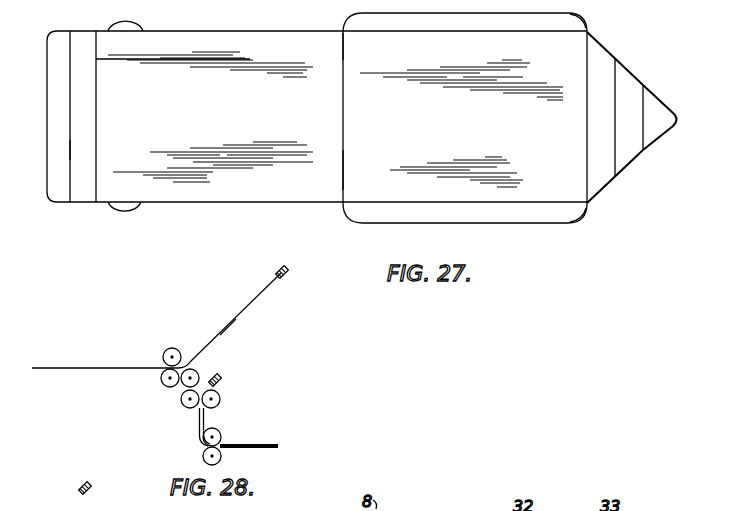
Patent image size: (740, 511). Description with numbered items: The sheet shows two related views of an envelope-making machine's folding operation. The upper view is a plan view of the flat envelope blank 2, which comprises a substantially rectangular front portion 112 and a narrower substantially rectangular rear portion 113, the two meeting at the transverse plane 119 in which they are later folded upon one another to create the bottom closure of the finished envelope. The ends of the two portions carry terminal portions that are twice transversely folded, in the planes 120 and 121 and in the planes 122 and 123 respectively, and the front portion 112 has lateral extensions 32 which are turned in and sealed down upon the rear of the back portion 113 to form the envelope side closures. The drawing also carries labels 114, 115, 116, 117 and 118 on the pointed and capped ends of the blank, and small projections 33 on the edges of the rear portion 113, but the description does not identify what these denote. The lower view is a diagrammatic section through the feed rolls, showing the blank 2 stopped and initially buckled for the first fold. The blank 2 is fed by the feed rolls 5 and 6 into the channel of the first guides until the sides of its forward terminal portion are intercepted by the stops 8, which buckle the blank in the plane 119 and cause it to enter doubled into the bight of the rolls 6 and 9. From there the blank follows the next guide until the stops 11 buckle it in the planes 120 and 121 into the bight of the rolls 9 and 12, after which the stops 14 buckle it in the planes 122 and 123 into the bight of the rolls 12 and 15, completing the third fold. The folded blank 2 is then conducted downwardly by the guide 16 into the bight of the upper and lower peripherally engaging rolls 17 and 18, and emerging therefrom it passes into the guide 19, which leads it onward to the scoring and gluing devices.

In FIG. 27, the envelope blank 2 is at (333, 30).
In FIG. 28, the envelope blank 2 is at (230, 323).
In FIG. 28, the feed roll 5 is at (172, 348).
In FIG. 28, the feed roll 6 is at (163, 384).
In FIG. 28, the stops 8 is at (292, 270).
In FIG. 28, the feed roll 9 is at (201, 371).
In FIG. 28, the stops 11 is at (92, 490).
In FIG. 28, the feed roll 12 is at (185, 406).
In FIG. 28, the stops 14 is at (222, 375).
In FIG. 28, the feed roll 15 is at (221, 399).
In FIG. 28, the guide 16 is at (197, 428).
In FIG. 28, the upper roll 17 is at (221, 436).
In FIG. 28, the lower roll 18 is at (219, 459).
In FIG. 28, the guide 19 is at (278, 434).
In FIG. 27, the lateral extensions 32 is at (580, 20).
In FIG. 27, the projection 33 is at (142, 26).
In FIG. 27, the front blank portion 112 is at (465, 118).
In FIG. 28, the front blank portion 112 is at (254, 301).
In FIG. 27, the rear blank portion 113 is at (206, 116).
In FIG. 28, the rear blank portion 113 is at (92, 367).
In FIG. 27, the tip 114 is at (667, 112).
In FIG. 27, the tapered portion 115 is at (637, 84).
In FIG. 27, the shoulder 116 is at (612, 60).
In FIG. 27, the end cap 117 is at (57, 117).
In FIG. 27, the cap wall 118 is at (80, 96).
In FIG. 27, the fold plane 119 is at (343, 168).
In FIG. 27, the fold plane 120 is at (613, 137).
In FIG. 27, the fold plane 121 is at (70, 142).
In FIG. 27, the fold plane 122 is at (583, 140).
In FIG. 27, the fold plane 123 is at (97, 143).